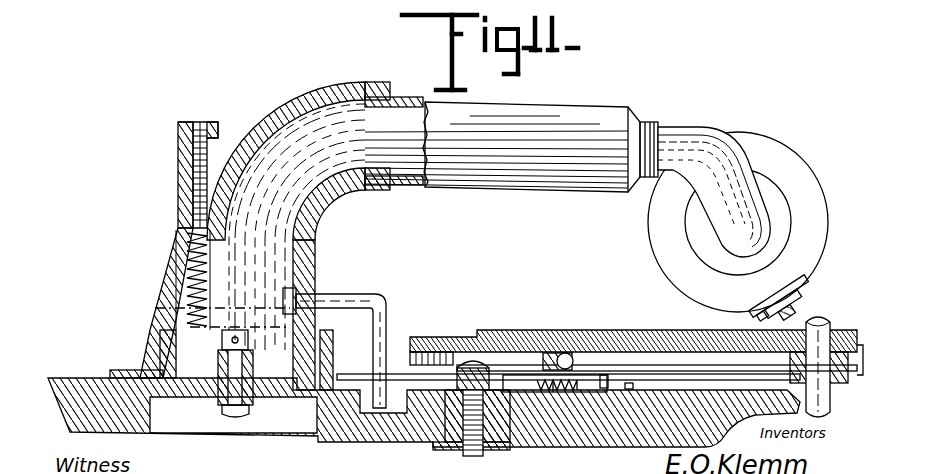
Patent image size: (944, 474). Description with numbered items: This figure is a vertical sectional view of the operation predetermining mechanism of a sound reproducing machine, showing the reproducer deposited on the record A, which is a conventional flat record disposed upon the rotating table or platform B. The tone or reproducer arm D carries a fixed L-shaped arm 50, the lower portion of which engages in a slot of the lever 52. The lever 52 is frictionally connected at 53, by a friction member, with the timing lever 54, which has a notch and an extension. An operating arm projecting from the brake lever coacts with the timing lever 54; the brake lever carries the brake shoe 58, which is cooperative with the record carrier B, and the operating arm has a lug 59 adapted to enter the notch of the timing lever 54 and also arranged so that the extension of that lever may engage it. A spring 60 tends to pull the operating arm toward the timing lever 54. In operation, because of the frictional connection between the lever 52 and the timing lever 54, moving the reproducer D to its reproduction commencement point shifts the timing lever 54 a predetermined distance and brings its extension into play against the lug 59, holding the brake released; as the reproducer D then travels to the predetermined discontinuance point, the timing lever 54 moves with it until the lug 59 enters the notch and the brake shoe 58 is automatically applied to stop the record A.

The L-shaped arm 50 is at (350, 289).
The lever 52 is at (400, 374).
The frictional connection 53 is at (460, 436).
The timing lever 54 is at (527, 380).
The brake shoe 58 is at (551, 357).
The lug 59 is at (637, 377).
The spring 60 is at (553, 392).
The record A is at (667, 336).
The rotating table B is at (585, 362).
The tone arm D is at (550, 147).